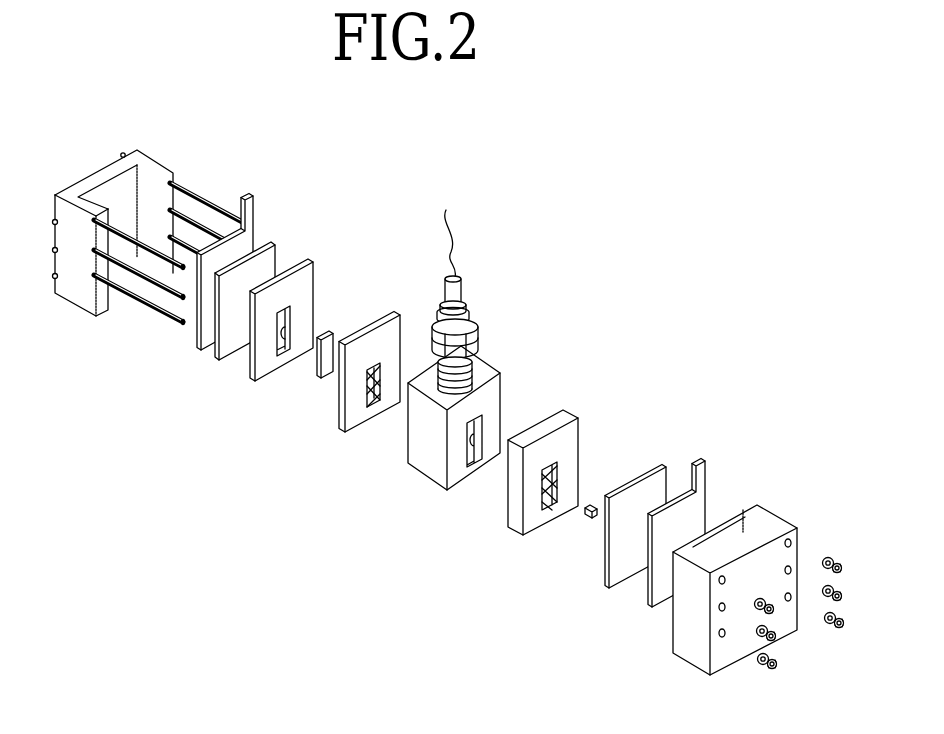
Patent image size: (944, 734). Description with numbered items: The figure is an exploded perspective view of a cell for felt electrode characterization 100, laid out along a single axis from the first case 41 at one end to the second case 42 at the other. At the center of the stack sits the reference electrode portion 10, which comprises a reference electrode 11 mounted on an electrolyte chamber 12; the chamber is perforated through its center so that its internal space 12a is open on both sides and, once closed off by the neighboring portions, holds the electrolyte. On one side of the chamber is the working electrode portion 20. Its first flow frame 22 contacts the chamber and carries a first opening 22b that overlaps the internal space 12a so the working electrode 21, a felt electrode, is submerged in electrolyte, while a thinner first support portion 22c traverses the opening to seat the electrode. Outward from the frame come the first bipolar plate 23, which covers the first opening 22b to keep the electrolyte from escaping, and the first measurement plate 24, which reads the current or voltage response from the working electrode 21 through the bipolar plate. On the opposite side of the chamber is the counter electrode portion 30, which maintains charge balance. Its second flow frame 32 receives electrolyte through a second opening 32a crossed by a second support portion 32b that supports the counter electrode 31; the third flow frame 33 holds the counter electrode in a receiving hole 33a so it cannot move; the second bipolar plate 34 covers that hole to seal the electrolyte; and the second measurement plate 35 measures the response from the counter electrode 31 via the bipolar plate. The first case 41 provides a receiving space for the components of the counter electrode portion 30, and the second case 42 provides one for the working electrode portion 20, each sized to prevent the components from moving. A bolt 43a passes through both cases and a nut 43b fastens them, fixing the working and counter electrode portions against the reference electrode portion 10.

The cell for felt electrode characterization 100 is at (778, 215).
The reference electrode portion 10 is at (466, 355).
The reference electrode 11 is at (466, 292).
The electrolyte chamber 12 is at (451, 410).
The internal space 12a is at (470, 426).
The working electrode portion 20 is at (595, 478).
The working electrode 21 is at (590, 506).
The first flow frame 22 is at (533, 480).
The first opening 22b is at (542, 470).
The first support portion 22c is at (557, 511).
The first bipolar plate 23 is at (657, 467).
The first measurement plate 24 is at (685, 507).
The counter electrode portion 30 is at (302, 323).
The counter electrode 31 is at (327, 338).
The second flow frame 32 is at (346, 363).
The second opening 32a is at (374, 407).
The second support portion 32b is at (365, 388).
The third flow frame 33 is at (272, 313).
The receiving hole 33a is at (283, 338).
The second bipolar plate 34 is at (274, 243).
The second measurement plate 35 is at (257, 210).
The first case 41 is at (80, 307).
The second case 42 is at (684, 660).
The bolt 43a is at (147, 306).
The nut 43b is at (773, 668).